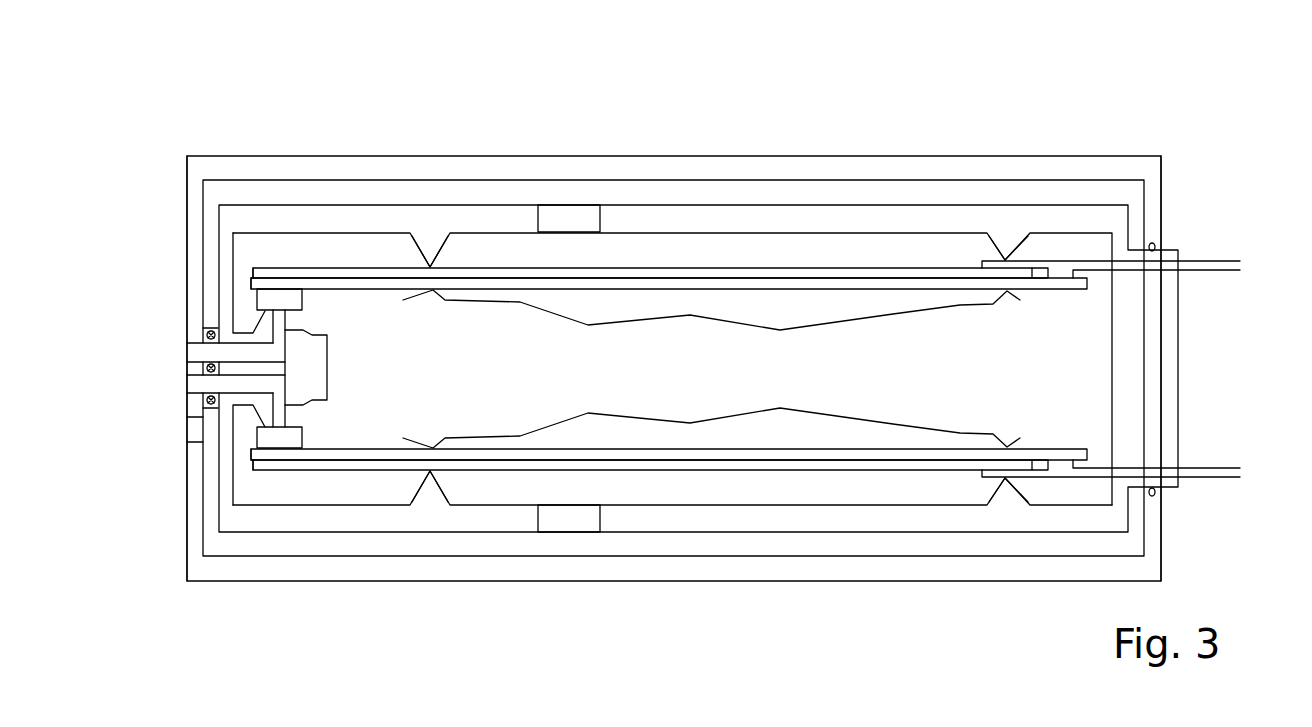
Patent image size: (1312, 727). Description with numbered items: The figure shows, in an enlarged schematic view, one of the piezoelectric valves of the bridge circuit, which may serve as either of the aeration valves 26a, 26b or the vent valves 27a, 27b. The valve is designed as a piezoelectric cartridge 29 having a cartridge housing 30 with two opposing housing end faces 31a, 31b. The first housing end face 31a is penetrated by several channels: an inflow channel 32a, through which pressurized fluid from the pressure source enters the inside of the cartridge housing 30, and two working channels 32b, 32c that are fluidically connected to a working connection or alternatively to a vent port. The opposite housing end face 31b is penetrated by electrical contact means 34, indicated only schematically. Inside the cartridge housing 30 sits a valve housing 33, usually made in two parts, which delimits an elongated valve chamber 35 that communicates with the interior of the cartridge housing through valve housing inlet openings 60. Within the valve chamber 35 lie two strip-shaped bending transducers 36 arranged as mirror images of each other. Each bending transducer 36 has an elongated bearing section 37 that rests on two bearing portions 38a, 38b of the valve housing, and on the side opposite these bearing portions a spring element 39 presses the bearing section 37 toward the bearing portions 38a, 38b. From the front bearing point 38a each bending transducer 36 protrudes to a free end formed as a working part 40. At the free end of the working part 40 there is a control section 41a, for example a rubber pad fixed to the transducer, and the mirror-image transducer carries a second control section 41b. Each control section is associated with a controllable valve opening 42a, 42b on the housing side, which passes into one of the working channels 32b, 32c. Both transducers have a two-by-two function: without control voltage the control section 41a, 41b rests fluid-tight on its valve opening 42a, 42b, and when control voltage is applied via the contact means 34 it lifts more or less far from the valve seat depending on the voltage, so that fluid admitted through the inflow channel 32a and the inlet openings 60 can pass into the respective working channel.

The aeration valve 26a is at (556, 130).
The aeration valve 26b is at (672, 488).
The vent valve 27a is at (249, 283).
The vent valve 27b is at (249, 455).
The piezoelectric cartridge 29 is at (1092, 151).
The cartridge housing 30 is at (212, 165).
The first housing end face 31a is at (180, 218).
The second housing end face 31b is at (1157, 190).
The inflow channel 32a is at (195, 428).
The working channel 32b is at (195, 352).
The working channel 32c is at (195, 383).
The valve housing 33 is at (823, 218).
The electrical contact means 34 is at (1210, 260).
The valve chamber 35 is at (295, 256).
The bending transducer 36 is at (363, 277).
The bearing section 37 is at (650, 273).
The bearing portion 38a is at (430, 492).
The bearing portion 38b is at (1010, 497).
The spring element 39 is at (803, 410).
The working part 40 is at (296, 458).
The control section 41a is at (268, 297).
The second control section 41b is at (277, 438).
The controllable valve opening 42a is at (286, 322).
The second controllable valve opening 42b is at (303, 403).
The valve housing inlet opening 60 is at (560, 220).